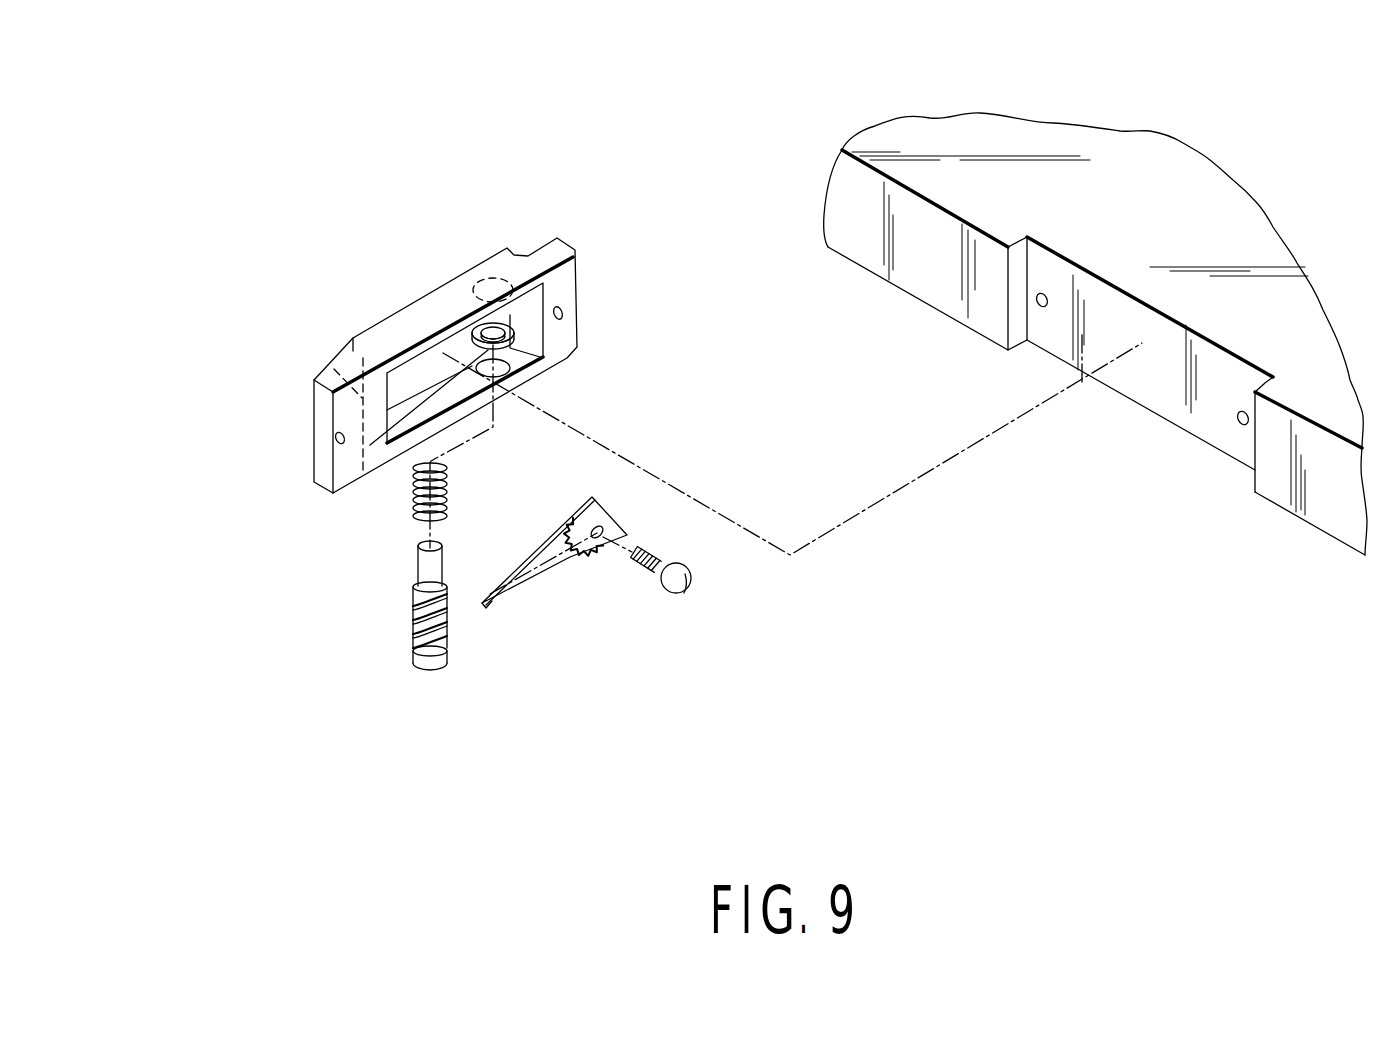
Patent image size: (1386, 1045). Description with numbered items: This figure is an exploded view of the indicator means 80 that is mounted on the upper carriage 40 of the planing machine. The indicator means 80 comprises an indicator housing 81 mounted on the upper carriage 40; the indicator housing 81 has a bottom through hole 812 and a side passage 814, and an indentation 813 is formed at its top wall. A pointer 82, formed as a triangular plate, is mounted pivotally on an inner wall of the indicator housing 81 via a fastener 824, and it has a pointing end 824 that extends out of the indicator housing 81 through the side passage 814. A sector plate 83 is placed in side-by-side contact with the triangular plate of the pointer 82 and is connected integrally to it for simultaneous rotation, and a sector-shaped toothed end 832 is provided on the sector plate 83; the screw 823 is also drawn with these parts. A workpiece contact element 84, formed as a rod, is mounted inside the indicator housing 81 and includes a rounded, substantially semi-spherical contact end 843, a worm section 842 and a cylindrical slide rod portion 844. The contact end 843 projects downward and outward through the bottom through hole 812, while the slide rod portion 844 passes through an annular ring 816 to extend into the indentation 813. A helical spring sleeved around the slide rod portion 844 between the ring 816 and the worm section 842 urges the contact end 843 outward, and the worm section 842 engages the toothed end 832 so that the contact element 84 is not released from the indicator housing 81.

The upper carriage 40 is at (1263, 184).
The indicator means 80 is at (454, 259).
The indicator housing 81 is at (406, 323).
The bottom through hole 812 is at (440, 420).
The indentation 813 is at (508, 272).
The side passage 814 is at (328, 365).
The annular ring 816 is at (512, 316).
The pointer 82 is at (552, 565).
The pointing end 824 is at (492, 603).
The sector plate 83 is at (597, 513).
The sector-shaped toothed end 832 is at (595, 557).
The screw 823 is at (681, 592).
The workpiece contact element 84 is at (434, 576).
The worm section 842 is at (420, 630).
The rounded contact end 843 is at (433, 667).
The cylindrical slide rod portion 844 is at (425, 558).